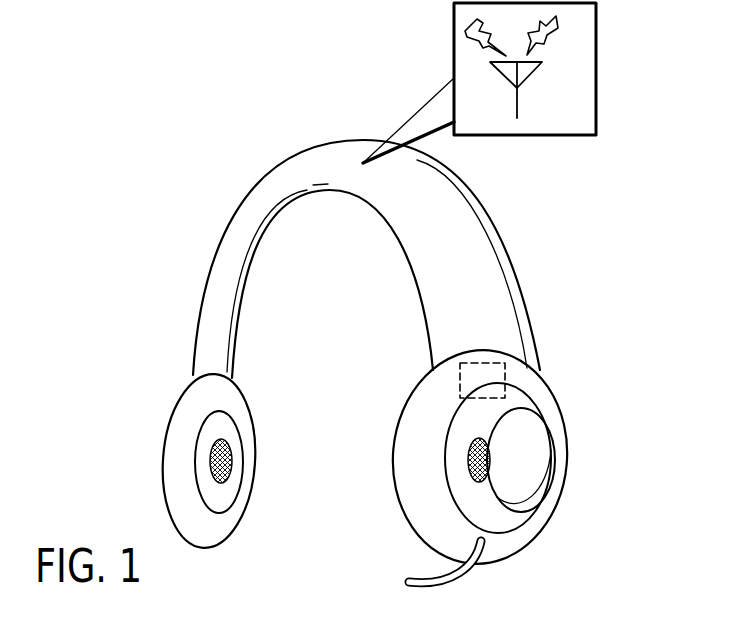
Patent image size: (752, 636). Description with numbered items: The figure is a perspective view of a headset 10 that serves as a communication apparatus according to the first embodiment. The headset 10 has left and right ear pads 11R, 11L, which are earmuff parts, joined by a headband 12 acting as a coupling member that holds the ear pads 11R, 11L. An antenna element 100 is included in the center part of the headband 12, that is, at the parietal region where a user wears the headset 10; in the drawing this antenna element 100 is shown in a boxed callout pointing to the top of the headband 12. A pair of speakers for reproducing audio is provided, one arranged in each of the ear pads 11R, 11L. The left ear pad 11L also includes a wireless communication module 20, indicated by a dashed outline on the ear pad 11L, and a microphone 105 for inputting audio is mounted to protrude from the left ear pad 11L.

The headset 10 is at (562, 316).
The headband 12 is at (320, 158).
The right ear pad 11R is at (202, 461).
The left ear pad 11L is at (467, 473).
The microphone 105 is at (462, 578).
The wireless communication module 20 is at (507, 373).
The antenna element 100 is at (598, 84).